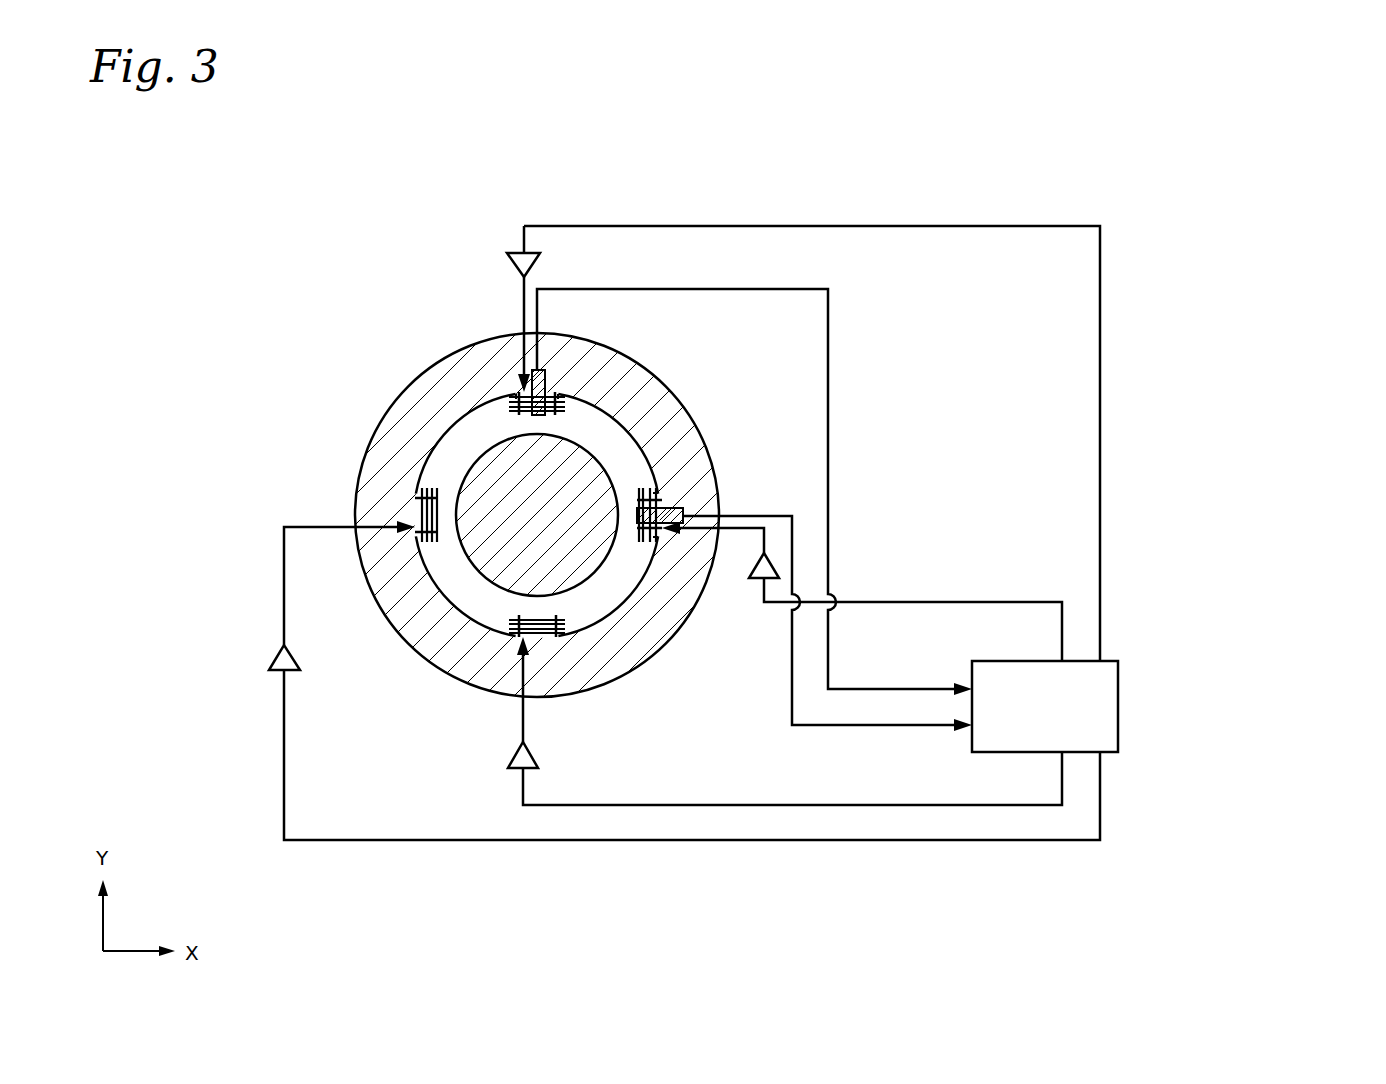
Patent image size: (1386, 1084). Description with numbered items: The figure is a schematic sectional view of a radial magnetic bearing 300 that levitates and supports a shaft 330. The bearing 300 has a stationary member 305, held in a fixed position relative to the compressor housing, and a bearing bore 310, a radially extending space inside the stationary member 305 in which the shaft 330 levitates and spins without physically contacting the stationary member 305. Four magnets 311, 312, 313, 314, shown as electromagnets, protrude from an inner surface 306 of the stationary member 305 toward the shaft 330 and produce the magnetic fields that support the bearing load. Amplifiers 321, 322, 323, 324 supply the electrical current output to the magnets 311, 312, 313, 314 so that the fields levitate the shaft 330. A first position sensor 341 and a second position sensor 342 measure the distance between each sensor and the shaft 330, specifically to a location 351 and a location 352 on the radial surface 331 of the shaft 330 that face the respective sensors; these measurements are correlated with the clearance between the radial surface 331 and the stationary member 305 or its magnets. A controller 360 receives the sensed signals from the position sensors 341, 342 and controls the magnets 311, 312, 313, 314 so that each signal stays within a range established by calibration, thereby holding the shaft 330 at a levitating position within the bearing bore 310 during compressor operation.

The bearing 300 is at (1237, 200).
The stationary member 305 is at (570, 696).
The inner surface 306 is at (627, 453).
The bearing bore 310 is at (470, 600).
The magnet 311 is at (632, 358).
The magnet 312 is at (622, 572).
The magnet 313 is at (560, 612).
The magnet 314 is at (436, 495).
The amplifier 321 is at (518, 250).
The amplifier 322 is at (778, 560).
The amplifier 323 is at (508, 772).
The amplifier 324 is at (272, 658).
The shaft 330 is at (465, 415).
The radial surface 331 is at (470, 440).
The first position sensor 341 is at (548, 368).
The second position sensor 342 is at (677, 510).
The location 351 is at (496, 395).
The location 352 is at (652, 472).
The controller 360 is at (1103, 698).